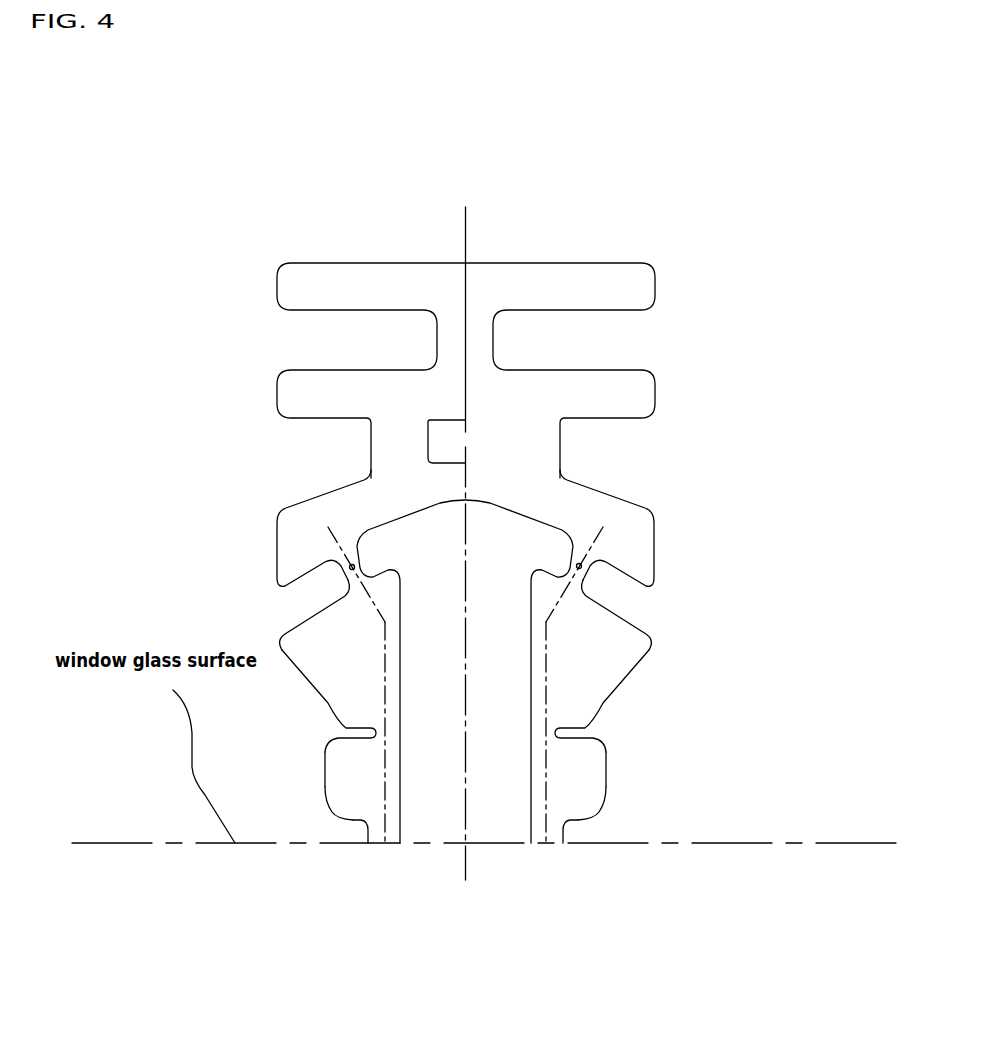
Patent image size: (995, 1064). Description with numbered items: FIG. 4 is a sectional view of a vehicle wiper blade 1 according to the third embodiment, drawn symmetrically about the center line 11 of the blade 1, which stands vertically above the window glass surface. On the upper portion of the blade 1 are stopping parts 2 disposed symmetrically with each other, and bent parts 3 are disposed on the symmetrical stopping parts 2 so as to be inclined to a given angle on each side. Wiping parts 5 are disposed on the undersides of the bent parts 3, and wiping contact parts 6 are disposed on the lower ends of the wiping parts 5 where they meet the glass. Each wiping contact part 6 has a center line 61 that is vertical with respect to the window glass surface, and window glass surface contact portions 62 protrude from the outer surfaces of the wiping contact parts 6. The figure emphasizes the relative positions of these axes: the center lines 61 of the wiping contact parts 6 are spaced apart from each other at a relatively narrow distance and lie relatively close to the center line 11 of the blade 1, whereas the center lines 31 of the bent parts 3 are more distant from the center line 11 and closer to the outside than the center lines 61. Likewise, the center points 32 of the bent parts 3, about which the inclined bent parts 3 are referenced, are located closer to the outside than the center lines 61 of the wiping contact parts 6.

The vehicle wiper blade 1 is at (446, 106).
The center line of the blade 11 is at (466, 292).
The stopping parts 2 is at (690, 278).
The bent parts 3 is at (340, 570).
The center lines of the bent parts 31 is at (660, 638).
The center points of the bent parts 32 is at (580, 566).
The wiping parts 5 is at (623, 702).
The wiping contact parts 6 is at (376, 843).
The center lines of the wiping contact parts 61 is at (385, 793).
The window glass surface contact portions 62 is at (332, 810).